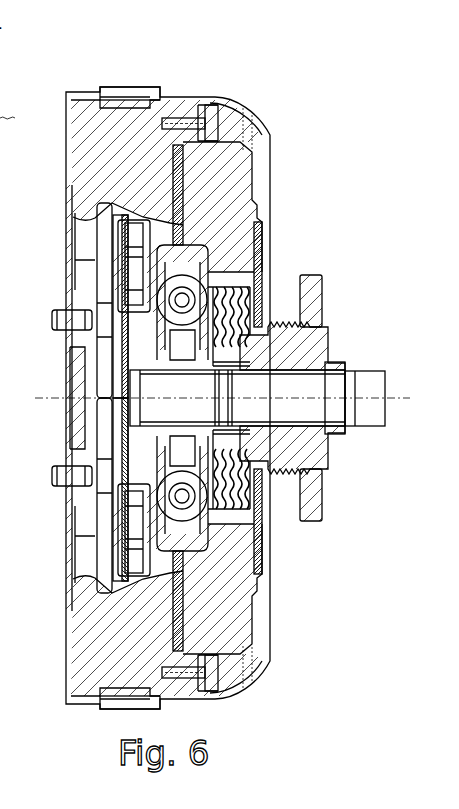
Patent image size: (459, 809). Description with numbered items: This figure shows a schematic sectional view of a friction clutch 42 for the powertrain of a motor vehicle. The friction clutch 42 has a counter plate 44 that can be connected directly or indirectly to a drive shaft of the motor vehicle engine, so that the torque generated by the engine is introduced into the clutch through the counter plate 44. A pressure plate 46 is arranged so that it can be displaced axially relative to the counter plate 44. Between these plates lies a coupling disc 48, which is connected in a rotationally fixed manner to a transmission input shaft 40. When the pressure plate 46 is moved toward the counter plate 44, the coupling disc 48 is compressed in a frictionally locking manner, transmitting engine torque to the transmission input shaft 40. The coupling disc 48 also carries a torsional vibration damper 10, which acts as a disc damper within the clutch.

The friction clutch 42 is at (276, 92).
The counter plate 44 is at (118, 125).
The coupling disc 48 is at (245, 192).
The pressure plate 46 is at (272, 237).
The torsional vibration damper 10 is at (273, 275).
The transmission input shaft 40 is at (300, 387).